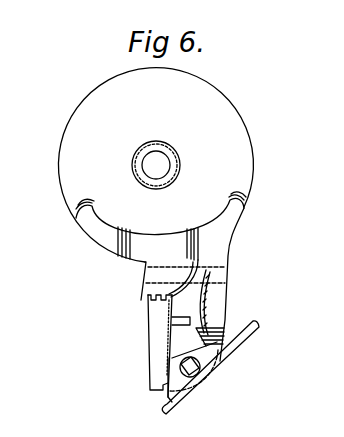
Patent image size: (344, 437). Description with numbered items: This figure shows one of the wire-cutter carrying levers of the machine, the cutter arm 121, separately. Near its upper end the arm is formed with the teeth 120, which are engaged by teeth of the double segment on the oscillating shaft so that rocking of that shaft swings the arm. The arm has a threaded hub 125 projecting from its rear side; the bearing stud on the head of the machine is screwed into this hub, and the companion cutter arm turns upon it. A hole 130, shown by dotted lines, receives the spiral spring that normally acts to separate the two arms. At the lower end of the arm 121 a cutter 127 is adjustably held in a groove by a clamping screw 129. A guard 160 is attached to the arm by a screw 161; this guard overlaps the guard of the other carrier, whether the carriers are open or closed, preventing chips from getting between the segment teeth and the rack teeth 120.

The cutter arm 121 is at (248, 178).
The threaded hub 125 is at (178, 150).
The hole 130 is at (146, 277).
The teeth 120 is at (147, 298).
The guard 160 is at (152, 357).
The screw 161 is at (172, 319).
The cutter 127 is at (257, 316).
The clamping screw 129 is at (205, 374).